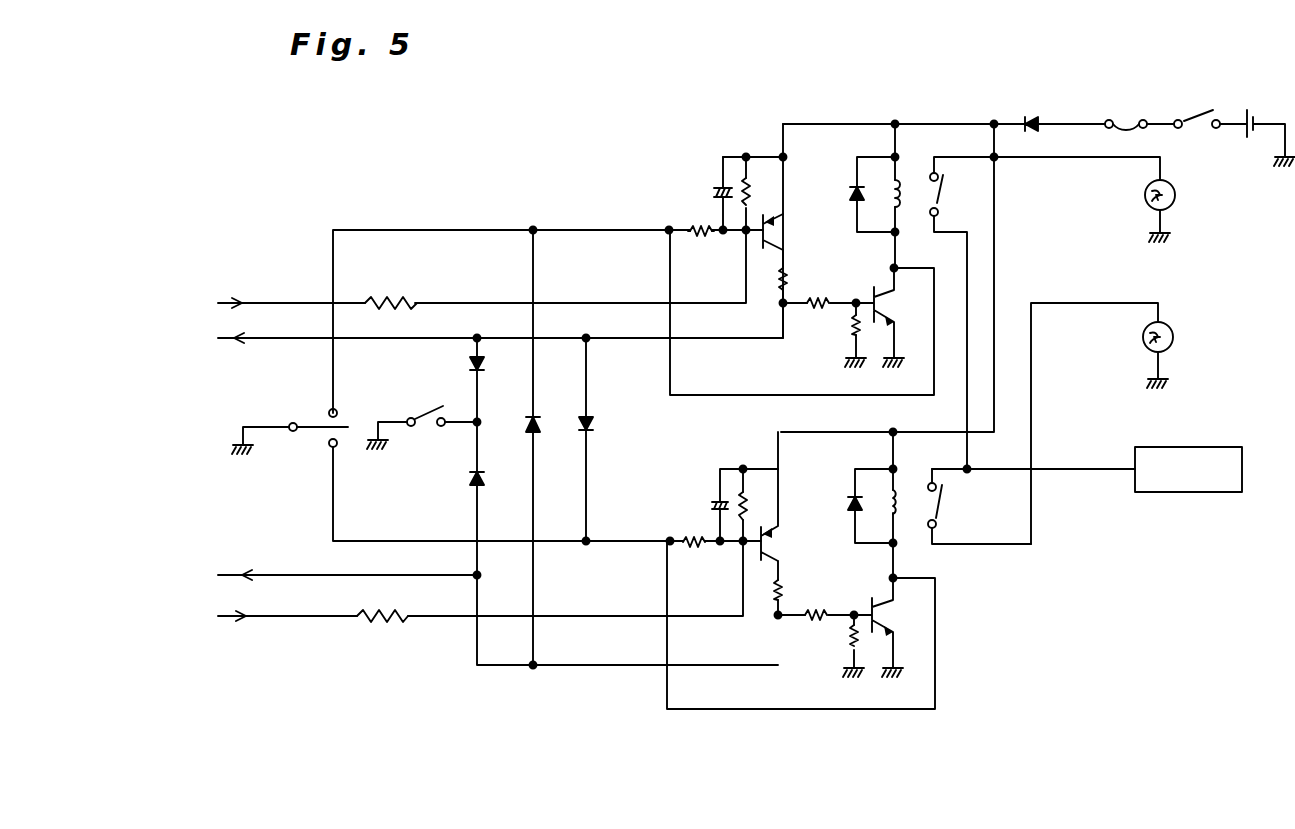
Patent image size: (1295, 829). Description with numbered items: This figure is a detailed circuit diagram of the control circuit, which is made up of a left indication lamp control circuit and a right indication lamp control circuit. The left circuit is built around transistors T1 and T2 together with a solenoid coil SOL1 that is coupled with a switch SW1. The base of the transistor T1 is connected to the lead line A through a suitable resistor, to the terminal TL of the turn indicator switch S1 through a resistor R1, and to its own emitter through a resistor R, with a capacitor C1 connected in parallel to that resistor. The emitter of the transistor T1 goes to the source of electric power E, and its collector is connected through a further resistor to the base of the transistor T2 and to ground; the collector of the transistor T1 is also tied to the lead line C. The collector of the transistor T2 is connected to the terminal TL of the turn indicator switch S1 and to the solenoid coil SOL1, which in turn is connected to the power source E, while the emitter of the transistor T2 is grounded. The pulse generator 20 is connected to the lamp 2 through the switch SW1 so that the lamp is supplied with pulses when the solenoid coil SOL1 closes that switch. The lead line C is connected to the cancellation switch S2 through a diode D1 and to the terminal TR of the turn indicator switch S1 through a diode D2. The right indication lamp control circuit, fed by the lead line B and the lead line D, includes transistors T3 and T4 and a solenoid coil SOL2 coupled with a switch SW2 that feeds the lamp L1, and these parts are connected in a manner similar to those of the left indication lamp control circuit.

The lead line A is at (471, 274).
The lead line B is at (469, 587).
The lead line C is at (489, 239).
The lead line D is at (338, 576).
The turn indicator switch S1 is at (311, 414).
The terminal TL is at (338, 410).
The terminal TR is at (337, 447).
The cancellation switch S2 is at (424, 405).
The diode D1 is at (481, 364).
The diode D2 is at (592, 418).
The resistor R1 is at (698, 228).
The capacitor C1 is at (718, 186).
The resistor R is at (747, 186).
The transistor T1 is at (773, 218).
The transistor T2 is at (881, 294).
The transistor T3 is at (776, 539).
The transistor T4 is at (881, 619).
The solenoid coil SOL1 is at (892, 188).
The solenoid coil SOL2 is at (888, 500).
The switch SW1 is at (945, 176).
The switch SW2 is at (940, 501).
The source of electric power E is at (1250, 112).
The lamp 2 is at (1175, 191).
The lamp L1 is at (1175, 335).
The pulse generator 20 is at (1179, 447).